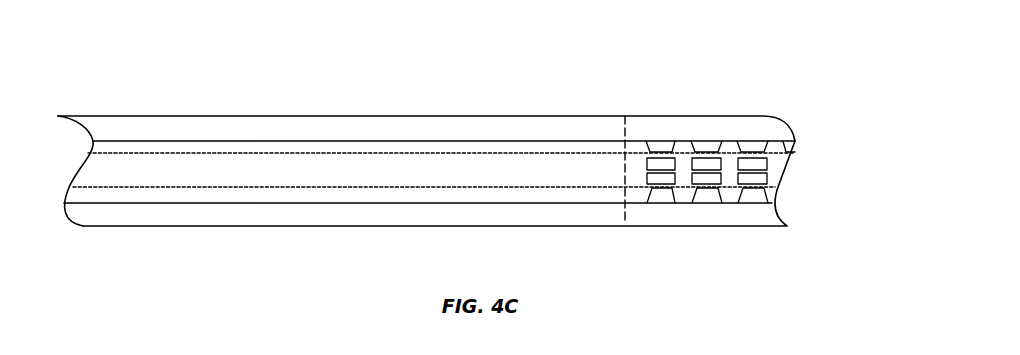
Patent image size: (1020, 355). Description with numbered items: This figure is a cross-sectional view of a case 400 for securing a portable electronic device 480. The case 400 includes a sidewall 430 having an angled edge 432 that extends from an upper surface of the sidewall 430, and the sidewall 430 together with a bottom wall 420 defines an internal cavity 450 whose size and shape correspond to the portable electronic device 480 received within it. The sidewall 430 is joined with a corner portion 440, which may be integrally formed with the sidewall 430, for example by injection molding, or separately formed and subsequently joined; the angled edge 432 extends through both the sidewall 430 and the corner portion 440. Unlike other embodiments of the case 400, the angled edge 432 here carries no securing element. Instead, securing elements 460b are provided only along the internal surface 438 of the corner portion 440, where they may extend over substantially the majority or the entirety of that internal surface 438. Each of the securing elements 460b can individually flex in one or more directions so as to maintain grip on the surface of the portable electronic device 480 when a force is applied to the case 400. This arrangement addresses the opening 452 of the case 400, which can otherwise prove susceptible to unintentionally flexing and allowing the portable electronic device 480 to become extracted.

The case 400 is at (330, 72).
The sidewall 430 is at (212, 124).
The angled edge 432 is at (413, 134).
The portable electronic device 480 is at (276, 172).
The bottom wall 420 is at (413, 221).
The internal cavity 450 is at (562, 142).
The corner portion 440 is at (737, 127).
The opening 452 is at (786, 191).
The second set of securing elements 460b is at (777, 180).
The internal surface 438 is at (777, 178).